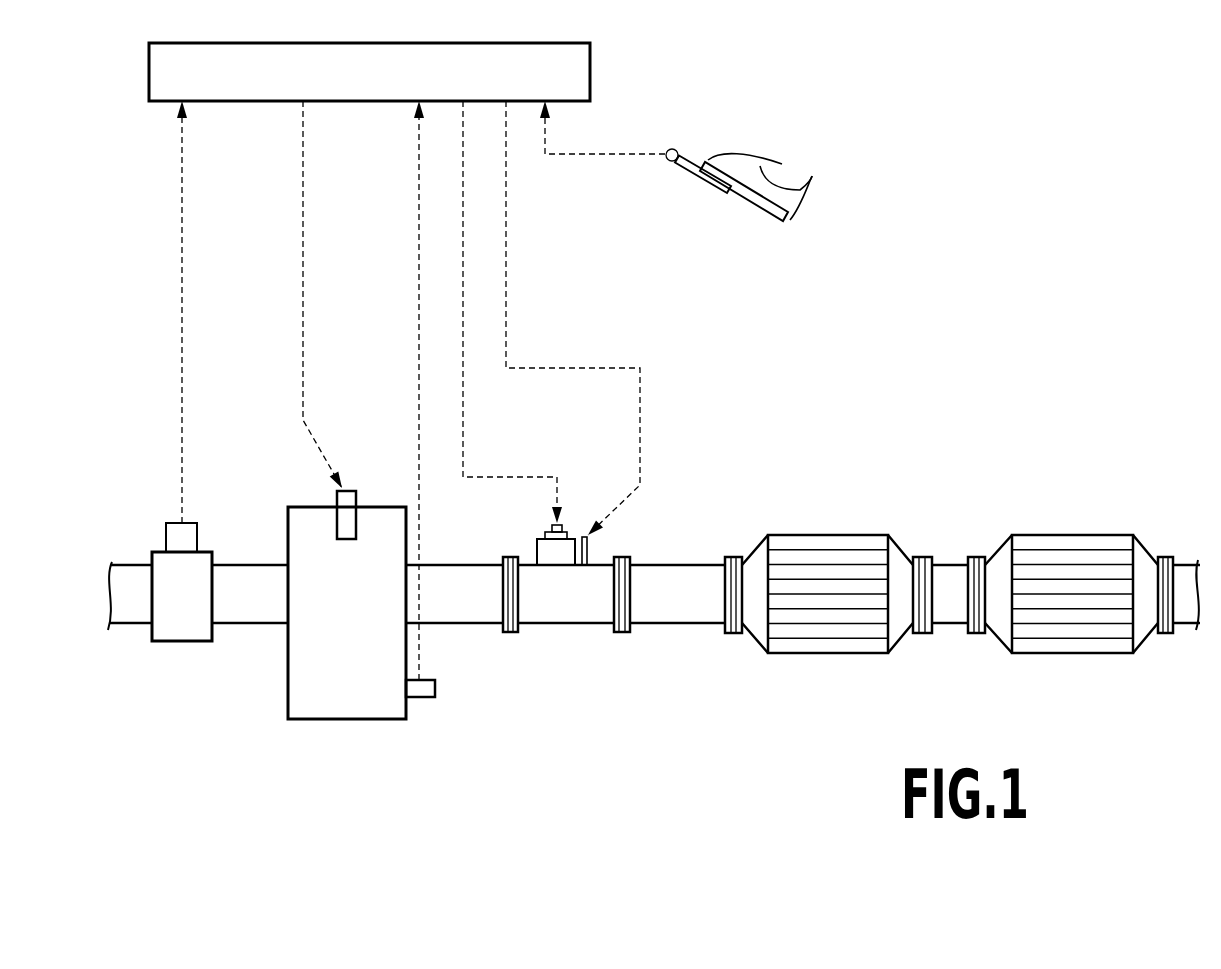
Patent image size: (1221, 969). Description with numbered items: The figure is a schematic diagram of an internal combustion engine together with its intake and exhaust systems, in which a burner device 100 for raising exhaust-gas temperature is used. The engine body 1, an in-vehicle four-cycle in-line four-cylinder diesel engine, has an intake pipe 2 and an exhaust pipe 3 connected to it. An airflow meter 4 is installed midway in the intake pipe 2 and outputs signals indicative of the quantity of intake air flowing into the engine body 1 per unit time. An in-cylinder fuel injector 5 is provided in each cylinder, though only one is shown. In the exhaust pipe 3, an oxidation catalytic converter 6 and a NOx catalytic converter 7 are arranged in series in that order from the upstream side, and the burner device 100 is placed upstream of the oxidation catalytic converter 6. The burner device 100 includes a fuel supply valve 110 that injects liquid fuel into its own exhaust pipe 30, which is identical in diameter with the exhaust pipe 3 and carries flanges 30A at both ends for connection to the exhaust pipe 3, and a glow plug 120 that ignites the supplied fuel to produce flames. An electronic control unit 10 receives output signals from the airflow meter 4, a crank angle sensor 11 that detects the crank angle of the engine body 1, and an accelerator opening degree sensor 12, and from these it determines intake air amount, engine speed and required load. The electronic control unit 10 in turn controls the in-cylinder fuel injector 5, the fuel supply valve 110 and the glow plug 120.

The engine body 1 is at (346, 722).
The intake pipe 2 is at (249, 628).
The exhaust pipe 3 is at (470, 565).
The airflow meter 4 is at (166, 530).
The in-cylinder fuel injector 5 is at (337, 496).
The oxidation catalytic converter 6 is at (830, 535).
The NOx catalytic converter 7 is at (1075, 535).
The electronic control unit 10 is at (590, 70).
The crank angle sensor 11 is at (417, 700).
The accelerator opening degree sensor 12 is at (672, 149).
The exhaust pipe 30 is at (595, 625).
The flanges 30A is at (518, 612).
The burner device 100 is at (571, 650).
The fuel supply valve 110 is at (552, 527).
The glow plug 120 is at (587, 552).